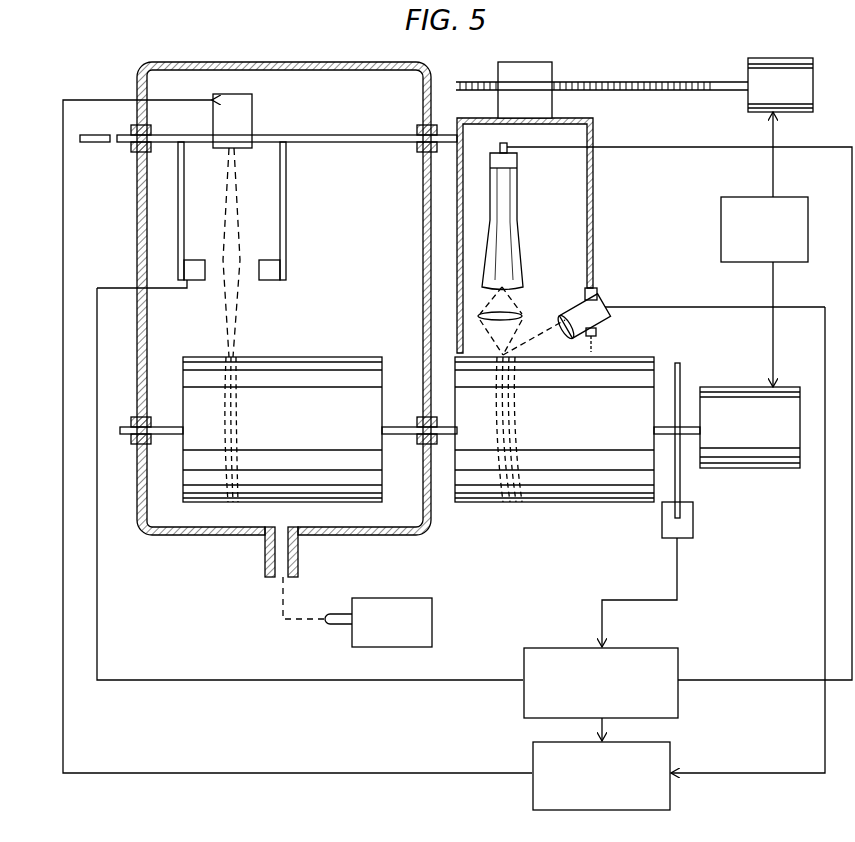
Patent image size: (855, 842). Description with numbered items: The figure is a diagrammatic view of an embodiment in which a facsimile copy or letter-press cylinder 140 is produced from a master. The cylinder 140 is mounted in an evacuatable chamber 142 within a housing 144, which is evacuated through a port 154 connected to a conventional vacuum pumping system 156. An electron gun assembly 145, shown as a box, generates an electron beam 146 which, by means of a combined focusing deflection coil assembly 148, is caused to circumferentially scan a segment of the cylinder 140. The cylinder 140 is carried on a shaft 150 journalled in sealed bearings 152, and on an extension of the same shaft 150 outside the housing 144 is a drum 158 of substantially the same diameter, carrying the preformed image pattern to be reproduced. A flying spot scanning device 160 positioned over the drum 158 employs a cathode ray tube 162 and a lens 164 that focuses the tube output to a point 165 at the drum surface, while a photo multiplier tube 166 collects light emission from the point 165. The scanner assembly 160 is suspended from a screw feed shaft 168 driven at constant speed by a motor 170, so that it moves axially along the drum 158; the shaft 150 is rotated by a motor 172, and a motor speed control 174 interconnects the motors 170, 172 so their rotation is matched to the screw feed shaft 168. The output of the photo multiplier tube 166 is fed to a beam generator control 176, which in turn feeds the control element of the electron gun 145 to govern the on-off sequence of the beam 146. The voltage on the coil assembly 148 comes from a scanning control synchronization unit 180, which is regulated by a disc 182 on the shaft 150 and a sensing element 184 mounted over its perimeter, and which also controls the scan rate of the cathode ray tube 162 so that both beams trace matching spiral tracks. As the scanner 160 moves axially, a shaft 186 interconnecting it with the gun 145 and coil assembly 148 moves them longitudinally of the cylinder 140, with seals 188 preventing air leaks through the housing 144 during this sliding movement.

The letter-press cylinder 140 is at (300, 414).
The evacuatable chamber 142 is at (372, 228).
The housing 144 is at (256, 62).
The electron gun assembly 145 is at (243, 109).
The electron beam 146 is at (226, 228).
The combined focusing deflection coil assembly 148 is at (270, 274).
The shaft 150 is at (398, 425).
The sealed bearings 152 is at (133, 421).
The port 154 is at (276, 558).
The vacuum pumping system 156 is at (414, 636).
The drum 158 is at (582, 414).
The flying spot scanning device 160 is at (594, 202).
The cathode ray tube 162 is at (508, 262).
The lens 164 is at (515, 318).
The point 165 is at (500, 352).
The photo multiplier tube 166 is at (602, 312).
The screw feed shaft 168 is at (628, 82).
The motor 170 is at (800, 58).
The motor 172 is at (785, 403).
The motor speed control 174 is at (720, 224).
The beam generator control 176 is at (596, 811).
The scanning control synchronization unit 180 is at (680, 660).
The disc 182 is at (682, 366).
The sensing element 184 is at (694, 529).
The shaft 186 is at (320, 138).
The seals 188 is at (134, 148).